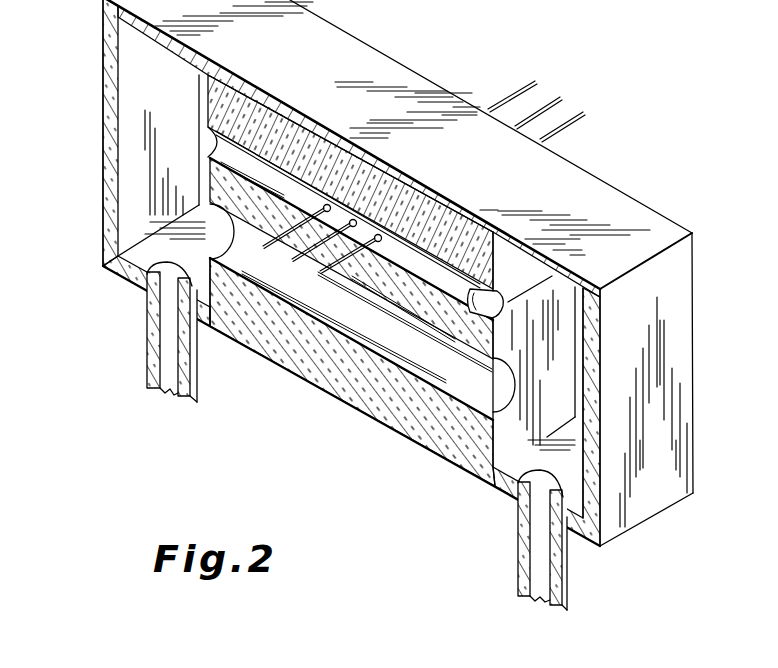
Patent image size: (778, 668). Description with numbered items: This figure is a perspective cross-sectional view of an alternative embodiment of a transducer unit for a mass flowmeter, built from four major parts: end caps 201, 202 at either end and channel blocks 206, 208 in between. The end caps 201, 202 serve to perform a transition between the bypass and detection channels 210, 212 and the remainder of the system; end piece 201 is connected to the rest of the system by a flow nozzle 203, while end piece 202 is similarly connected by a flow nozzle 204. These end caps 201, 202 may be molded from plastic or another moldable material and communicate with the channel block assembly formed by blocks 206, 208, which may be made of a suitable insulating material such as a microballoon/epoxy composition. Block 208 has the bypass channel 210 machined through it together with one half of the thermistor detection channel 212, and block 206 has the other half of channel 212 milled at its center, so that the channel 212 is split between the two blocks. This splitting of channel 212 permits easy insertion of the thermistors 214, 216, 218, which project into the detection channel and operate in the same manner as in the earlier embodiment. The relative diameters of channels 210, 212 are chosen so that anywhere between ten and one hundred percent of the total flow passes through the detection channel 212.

The end cap 201 is at (133, 130).
The end cap 202 is at (562, 343).
The flow nozzle 203 is at (158, 350).
The flow nozzle 204 is at (537, 543).
The channel block 206 is at (307, 138).
The channel block 208 is at (362, 396).
The bypass channel 210 is at (432, 358).
The thermistor detection channel 212 is at (488, 333).
The thermistor 214 is at (327, 204).
The thermistor 216 is at (353, 219).
The thermistor 218 is at (378, 234).